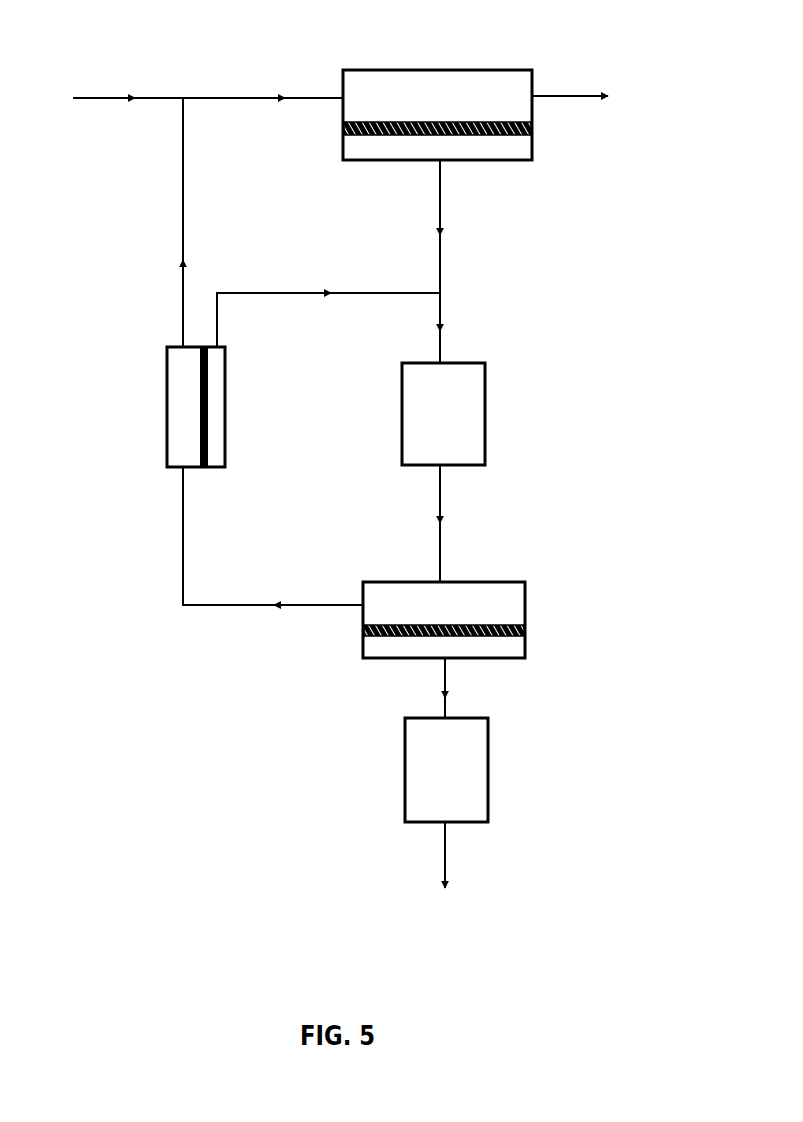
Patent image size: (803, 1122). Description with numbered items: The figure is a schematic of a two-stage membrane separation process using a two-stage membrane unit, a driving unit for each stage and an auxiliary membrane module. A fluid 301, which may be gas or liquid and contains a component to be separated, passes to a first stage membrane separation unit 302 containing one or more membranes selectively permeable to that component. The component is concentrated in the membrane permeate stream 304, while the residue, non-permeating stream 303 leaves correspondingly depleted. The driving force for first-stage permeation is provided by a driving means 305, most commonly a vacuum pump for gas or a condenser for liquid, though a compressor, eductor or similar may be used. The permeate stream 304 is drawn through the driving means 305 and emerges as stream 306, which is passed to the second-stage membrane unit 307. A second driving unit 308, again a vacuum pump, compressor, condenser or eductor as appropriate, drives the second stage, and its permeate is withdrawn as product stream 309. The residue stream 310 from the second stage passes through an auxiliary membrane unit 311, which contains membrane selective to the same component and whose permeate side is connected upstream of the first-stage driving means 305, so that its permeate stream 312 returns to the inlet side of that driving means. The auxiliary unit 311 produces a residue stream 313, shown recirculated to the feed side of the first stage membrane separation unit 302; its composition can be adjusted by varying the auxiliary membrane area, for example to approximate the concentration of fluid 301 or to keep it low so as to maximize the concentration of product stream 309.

The fluid 301 is at (208, 78).
The first stage membrane separation unit 302 is at (430, 70).
The residue, non-permeating stream 303 is at (597, 99).
The membrane permeate stream 304 is at (411, 261).
The driving means 305 is at (485, 420).
The stream 306 is at (410, 523).
The second-stage membrane unit 307 is at (513, 582).
The second driving unit 308 is at (488, 778).
The product stream 309 is at (444, 876).
The residue stream 310 is at (273, 536).
The auxiliary membrane unit 311 is at (167, 441).
The permeate stream 312 is at (328, 303).
The residue stream 313 is at (150, 222).